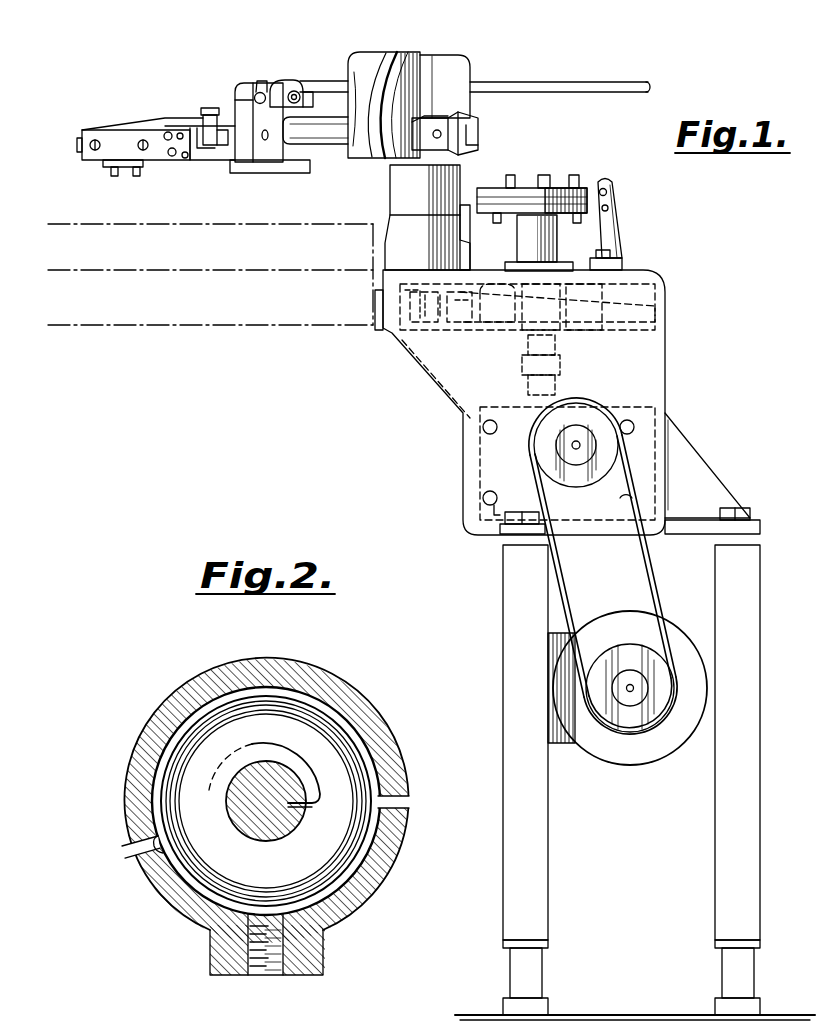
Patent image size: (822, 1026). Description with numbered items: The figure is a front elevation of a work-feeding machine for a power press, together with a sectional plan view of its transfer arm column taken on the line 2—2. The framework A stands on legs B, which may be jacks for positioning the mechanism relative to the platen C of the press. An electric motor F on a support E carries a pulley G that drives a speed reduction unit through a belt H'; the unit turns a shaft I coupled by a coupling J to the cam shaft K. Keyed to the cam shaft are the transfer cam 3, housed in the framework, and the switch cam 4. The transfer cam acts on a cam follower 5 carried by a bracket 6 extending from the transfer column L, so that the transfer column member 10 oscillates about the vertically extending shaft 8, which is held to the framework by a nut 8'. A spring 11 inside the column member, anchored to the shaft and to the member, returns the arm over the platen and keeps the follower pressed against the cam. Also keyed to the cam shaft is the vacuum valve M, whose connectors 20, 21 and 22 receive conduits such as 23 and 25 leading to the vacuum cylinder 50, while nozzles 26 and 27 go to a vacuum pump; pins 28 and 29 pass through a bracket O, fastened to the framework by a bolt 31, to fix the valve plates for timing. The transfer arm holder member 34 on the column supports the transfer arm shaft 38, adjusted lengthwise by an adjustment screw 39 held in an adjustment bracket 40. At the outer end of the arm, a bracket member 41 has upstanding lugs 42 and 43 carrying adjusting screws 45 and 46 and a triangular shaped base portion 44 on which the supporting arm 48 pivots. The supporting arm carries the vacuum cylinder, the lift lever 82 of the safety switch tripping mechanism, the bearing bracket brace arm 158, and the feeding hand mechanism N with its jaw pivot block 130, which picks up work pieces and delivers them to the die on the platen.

In FIG. 1, the work piece feeding hand mechanism N is at (168, 102).
In FIG. 1, the bearing bracket brace arm 158 is at (116, 140).
In FIG. 1, the jaw pivot block 130 is at (105, 166).
In FIG. 1, the vacuum cylinder 50 is at (240, 98).
In FIG. 1, the adjusting screw 45 is at (256, 95).
In FIG. 1, the upstanding lug 43 is at (272, 88).
In FIG. 1, the upstanding lug 42 is at (294, 90).
In FIG. 1, the adjusting screw 46 is at (310, 112).
In FIG. 1, the transfer arm shaft 38 is at (342, 112).
In FIG. 1, the transfer arm holder member 34 is at (464, 64).
In FIG. 1, the conduit 25 is at (528, 82).
In FIG. 1, the conduit 23 is at (637, 80).
In FIG. 1, the adjustment screw 39 is at (472, 128).
In FIG. 1, the adjustment bracket 40 is at (470, 147).
In FIG. 1, the transfer column member 10 is at (396, 174).
In FIG. 2, the transfer column member 10 is at (187, 700).
In FIG. 1, the transfer column L is at (390, 201).
In FIG. 1, the connector 20 is at (510, 175).
In FIG. 1, the connector 21 is at (545, 175).
In FIG. 1, the connector 22 is at (575, 175).
In FIG. 1, the nozzle 26 is at (496, 212).
In FIG. 1, the vacuum valve M is at (608, 175).
In FIG. 1, the pin 28 is at (608, 190).
In FIG. 1, the pin 29 is at (610, 206).
In FIG. 1, the nozzle 27 is at (614, 232).
In FIG. 1, the bracket O is at (634, 236).
In FIG. 1, the bolt 31 is at (624, 264).
In FIG. 1, the section line 2 is at (470, 252).
In FIG. 1, the switch cam 4 is at (570, 266).
In FIG. 1, the transfer cam 3 is at (628, 325).
In FIG. 1, the framework A is at (672, 362).
In FIG. 1, the platen C is at (188, 330).
In FIG. 1, the bracket 6 is at (444, 316).
In FIG. 1, the cam follower 5 is at (488, 320).
In FIG. 1, the nut 8' is at (400, 337).
In FIG. 1, the cam shaft K is at (530, 336).
In FIG. 1, the coupling J is at (562, 368).
In FIG. 1, the shaft I is at (528, 392).
In FIG. 1, the belt H' is at (611, 484).
In FIG. 1, the electric motor F is at (606, 622).
In FIG. 1, the support E is at (566, 745).
In FIG. 1, the pulley G is at (632, 720).
In FIG. 1, the legs B is at (503, 730).
In FIG. 2, the spring 11 is at (162, 738).
In FIG. 2, the shaft 8 is at (264, 809).
In FIG. 1, the supporting arm 48 is at (195, 160).
In FIG. 1, the lift lever 82 is at (214, 150).
In FIG. 1, the triangular shaped base portion 44 is at (243, 176).
In FIG. 1, the bracket member 41 is at (292, 168).